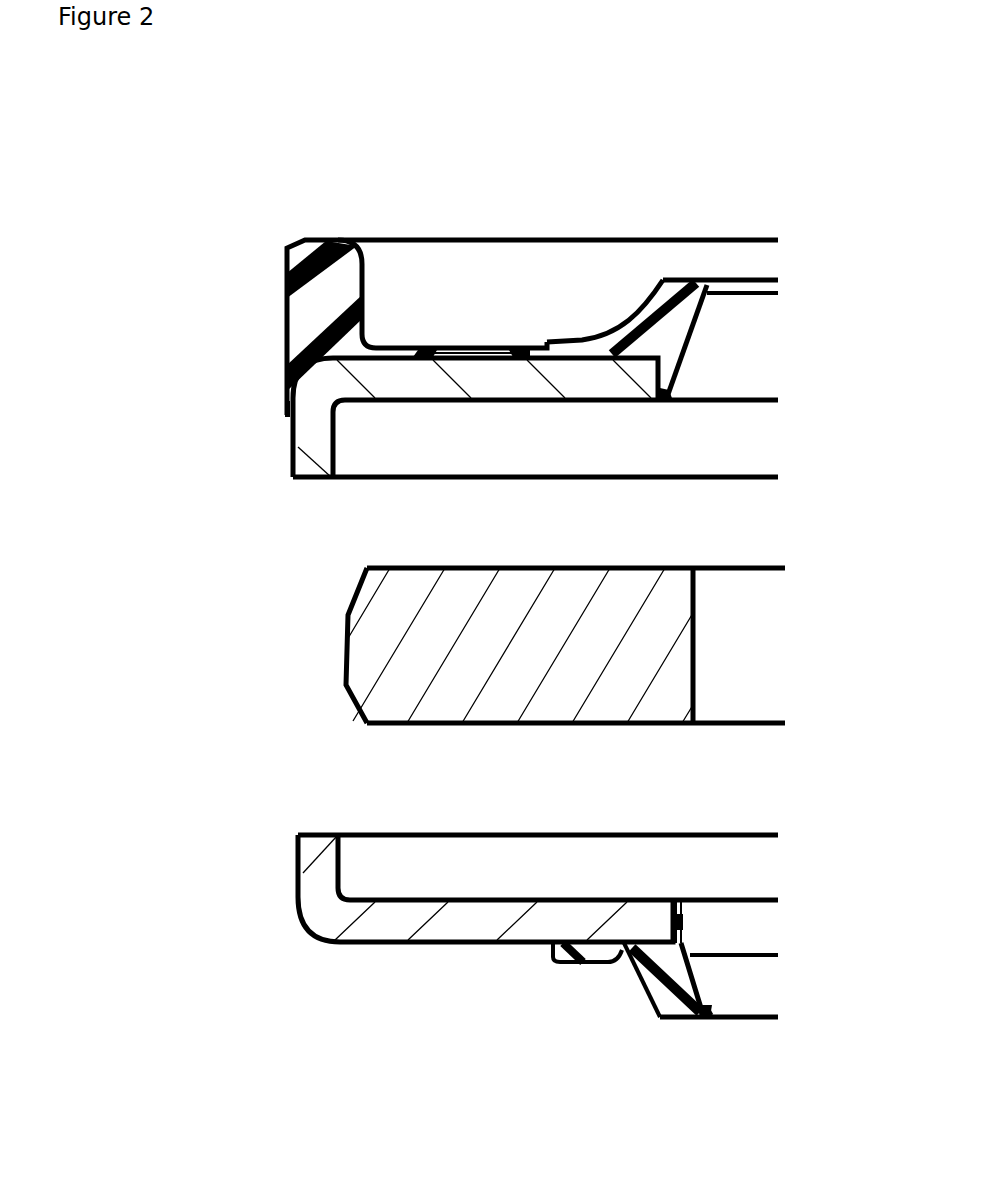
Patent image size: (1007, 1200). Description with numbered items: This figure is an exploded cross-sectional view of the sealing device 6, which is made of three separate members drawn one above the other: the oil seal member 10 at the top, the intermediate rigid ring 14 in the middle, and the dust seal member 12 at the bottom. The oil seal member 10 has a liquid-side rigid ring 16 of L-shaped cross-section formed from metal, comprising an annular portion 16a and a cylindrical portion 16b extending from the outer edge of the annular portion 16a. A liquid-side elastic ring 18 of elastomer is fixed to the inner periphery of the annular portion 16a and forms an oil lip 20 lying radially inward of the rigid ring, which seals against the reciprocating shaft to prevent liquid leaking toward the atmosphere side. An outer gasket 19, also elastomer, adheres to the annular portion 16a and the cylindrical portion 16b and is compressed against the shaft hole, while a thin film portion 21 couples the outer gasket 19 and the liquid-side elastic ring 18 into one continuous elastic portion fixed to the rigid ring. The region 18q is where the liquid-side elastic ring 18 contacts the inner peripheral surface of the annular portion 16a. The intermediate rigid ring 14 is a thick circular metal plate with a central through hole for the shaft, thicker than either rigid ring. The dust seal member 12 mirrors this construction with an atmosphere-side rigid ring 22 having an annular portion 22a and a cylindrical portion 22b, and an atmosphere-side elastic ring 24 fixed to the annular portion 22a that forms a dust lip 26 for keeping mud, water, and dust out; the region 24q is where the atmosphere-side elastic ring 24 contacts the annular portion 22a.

The sealing device 6 is at (247, 219).
The oil seal member 10 is at (287, 268).
The outer gasket 19 is at (316, 318).
The thin film portion 21 is at (410, 347).
The liquid-side rigid ring 16 is at (476, 385).
The annular portion 16a is at (477, 377).
The cylindrical portion 16b is at (253, 457).
The liquid-side elastic ring 18 is at (620, 330).
The region 18q is at (680, 387).
The oil lip 20 is at (705, 307).
The intermediate rigid ring 14 is at (365, 597).
The dust seal member 12 is at (315, 930).
The atmosphere-side rigid ring 22 is at (479, 942).
The annular portion 22a is at (497, 942).
The cylindrical portion 22b is at (298, 895).
The atmosphere-side elastic ring 24 is at (626, 958).
The region 24q is at (682, 912).
The dust lip 26 is at (700, 995).